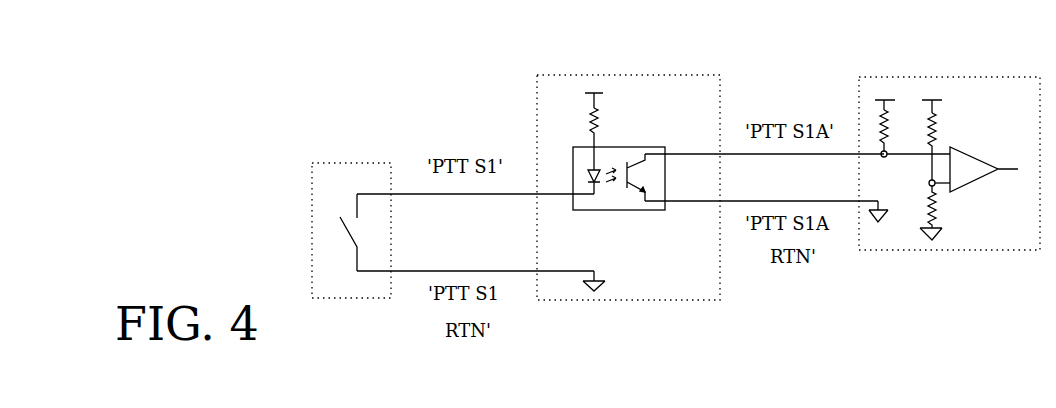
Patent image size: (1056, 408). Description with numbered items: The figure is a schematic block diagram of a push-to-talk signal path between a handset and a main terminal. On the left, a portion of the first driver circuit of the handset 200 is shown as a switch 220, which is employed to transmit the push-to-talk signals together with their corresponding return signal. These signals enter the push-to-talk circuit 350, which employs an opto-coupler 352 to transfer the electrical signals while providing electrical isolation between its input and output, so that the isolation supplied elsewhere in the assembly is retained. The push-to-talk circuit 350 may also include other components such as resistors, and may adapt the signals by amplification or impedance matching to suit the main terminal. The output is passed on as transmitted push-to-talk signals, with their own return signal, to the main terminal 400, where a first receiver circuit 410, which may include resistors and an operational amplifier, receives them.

The handset 200 is at (351, 163).
The switch 220 is at (341, 234).
The push-to-talk circuit 350 is at (628, 75).
The opto-coupler 352 is at (618, 212).
The main terminal 400 is at (932, 76).
The first receiver circuit 410 is at (978, 138).